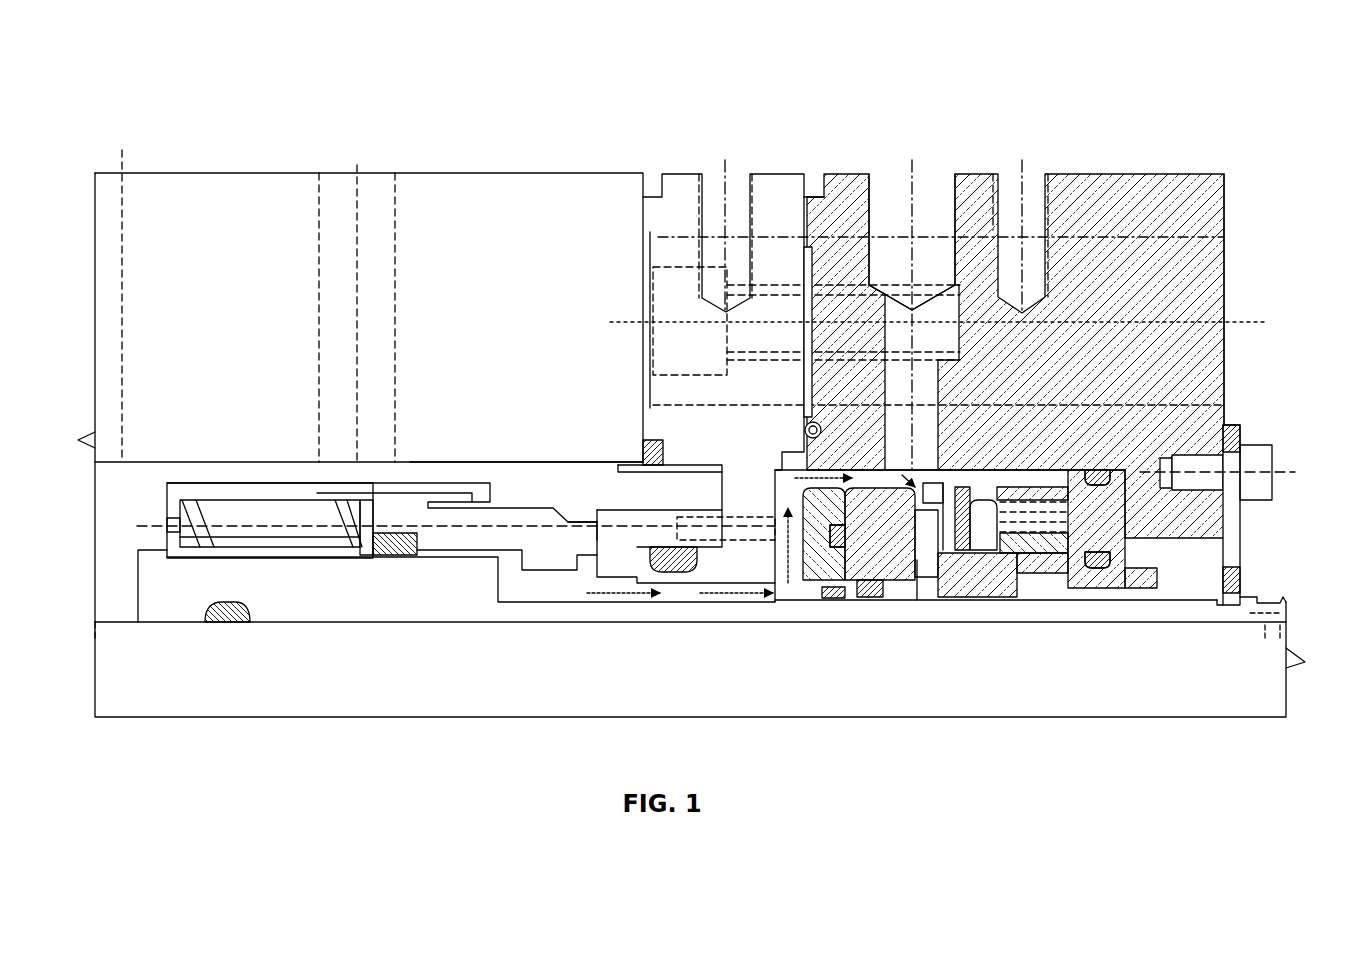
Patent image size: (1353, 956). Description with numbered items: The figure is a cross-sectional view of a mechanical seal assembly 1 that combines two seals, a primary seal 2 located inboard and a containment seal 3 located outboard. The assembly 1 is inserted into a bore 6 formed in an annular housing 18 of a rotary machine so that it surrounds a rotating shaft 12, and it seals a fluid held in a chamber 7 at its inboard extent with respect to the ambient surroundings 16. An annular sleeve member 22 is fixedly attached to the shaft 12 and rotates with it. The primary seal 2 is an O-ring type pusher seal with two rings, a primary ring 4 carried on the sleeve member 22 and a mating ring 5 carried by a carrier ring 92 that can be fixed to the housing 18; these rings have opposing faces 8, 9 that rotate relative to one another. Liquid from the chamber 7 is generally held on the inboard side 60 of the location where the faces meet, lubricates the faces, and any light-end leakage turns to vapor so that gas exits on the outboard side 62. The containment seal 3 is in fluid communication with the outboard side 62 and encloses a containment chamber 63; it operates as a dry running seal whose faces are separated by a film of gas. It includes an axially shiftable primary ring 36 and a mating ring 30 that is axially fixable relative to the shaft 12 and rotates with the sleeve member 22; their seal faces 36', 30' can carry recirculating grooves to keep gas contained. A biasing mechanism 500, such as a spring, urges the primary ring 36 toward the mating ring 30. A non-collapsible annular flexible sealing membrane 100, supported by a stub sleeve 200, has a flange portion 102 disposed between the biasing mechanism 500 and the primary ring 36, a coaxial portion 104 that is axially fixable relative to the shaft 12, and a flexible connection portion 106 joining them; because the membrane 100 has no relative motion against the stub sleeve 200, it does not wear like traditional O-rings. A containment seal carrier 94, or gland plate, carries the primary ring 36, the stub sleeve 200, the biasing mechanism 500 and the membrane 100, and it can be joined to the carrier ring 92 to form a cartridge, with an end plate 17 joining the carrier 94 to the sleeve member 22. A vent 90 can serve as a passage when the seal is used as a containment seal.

The mechanical seal assembly 1 is at (136, 90).
The primary seal 2 is at (505, 468).
The containment seal 3 is at (874, 636).
The primary ring 4 is at (447, 542).
The mating ring 5 is at (642, 542).
The bore 6 is at (150, 468).
The chamber 7 is at (107, 531).
The face 8 is at (583, 544).
The face 9 is at (607, 529).
The rotating shaft 12 is at (155, 683).
The ambient surroundings 16 is at (1258, 284).
The end plate 17 is at (1245, 540).
The annular housing 18 is at (205, 315).
The annular sleeve member 22 is at (410, 608).
The mating ring 30 is at (829, 578).
The seal face 30' is at (884, 578).
The primary ring 36 is at (939, 586).
The seal face 36' is at (979, 577).
The inboard side 60 is at (565, 497).
The outboard side 62 is at (575, 583).
The containment chamber 63 is at (735, 595).
The vent 90 is at (863, 192).
The carrier ring 92 is at (682, 187).
The containment seal carrier 94 is at (1125, 185).
The annular flexible sealing membrane 100 is at (1033, 577).
The flange portion 102 is at (987, 569).
The coaxial portion 104 is at (1100, 575).
The flexible connection portion 106 is at (1007, 582).
The stub sleeve 200 is at (1065, 579).
The biasing mechanism 500 is at (1130, 579).